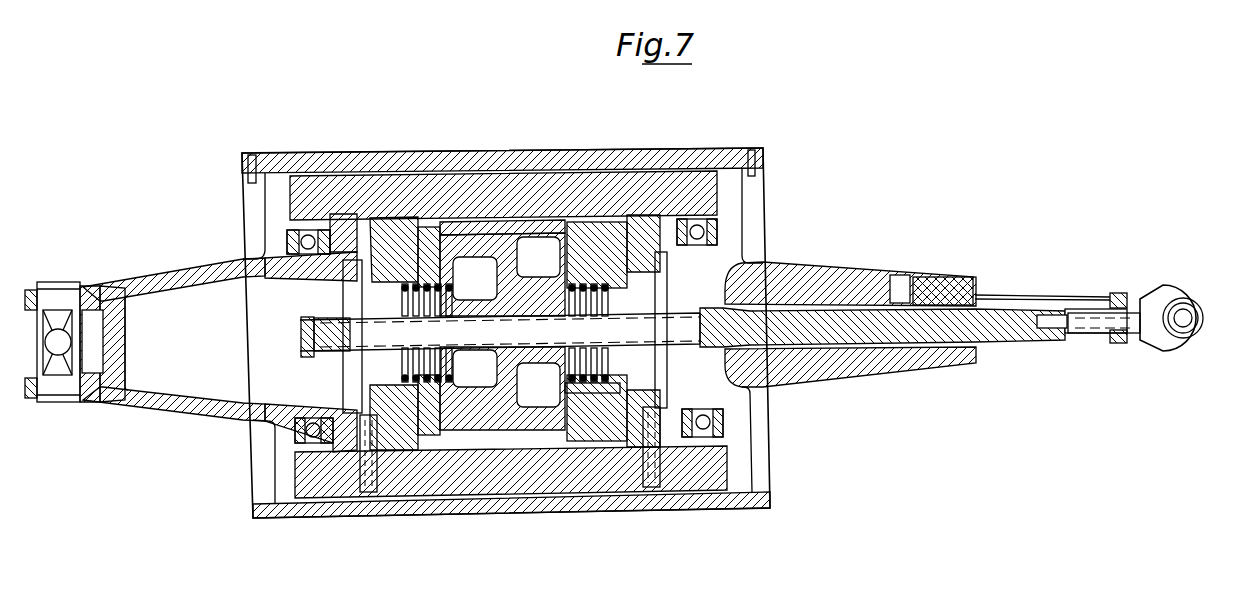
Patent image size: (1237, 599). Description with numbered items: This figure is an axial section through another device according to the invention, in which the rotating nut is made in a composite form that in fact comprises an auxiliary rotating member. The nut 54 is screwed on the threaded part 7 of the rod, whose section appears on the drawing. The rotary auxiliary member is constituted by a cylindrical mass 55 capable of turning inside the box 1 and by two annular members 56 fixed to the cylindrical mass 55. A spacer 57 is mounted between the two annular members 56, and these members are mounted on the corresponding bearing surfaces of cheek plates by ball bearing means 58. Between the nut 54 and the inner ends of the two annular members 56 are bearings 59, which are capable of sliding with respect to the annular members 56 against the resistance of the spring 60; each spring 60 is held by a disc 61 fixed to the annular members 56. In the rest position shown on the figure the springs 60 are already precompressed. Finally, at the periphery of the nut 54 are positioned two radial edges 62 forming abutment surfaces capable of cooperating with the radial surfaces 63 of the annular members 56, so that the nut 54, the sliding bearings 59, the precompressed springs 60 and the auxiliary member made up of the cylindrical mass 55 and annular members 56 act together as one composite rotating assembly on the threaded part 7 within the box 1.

The box 1 is at (717, 507).
The threaded part of the rod 7 is at (1028, 340).
The nut 54 is at (508, 420).
The cylindrical mass 55 is at (588, 477).
The annular members 56 is at (653, 230).
The spacer 57 is at (497, 224).
The ball bearing means 58 is at (297, 433).
The bearings 59 is at (467, 392).
The spring 60 is at (603, 394).
The disc 61 is at (355, 258).
The radial edges 62 is at (445, 283).
The radial surfaces 63 is at (437, 240).